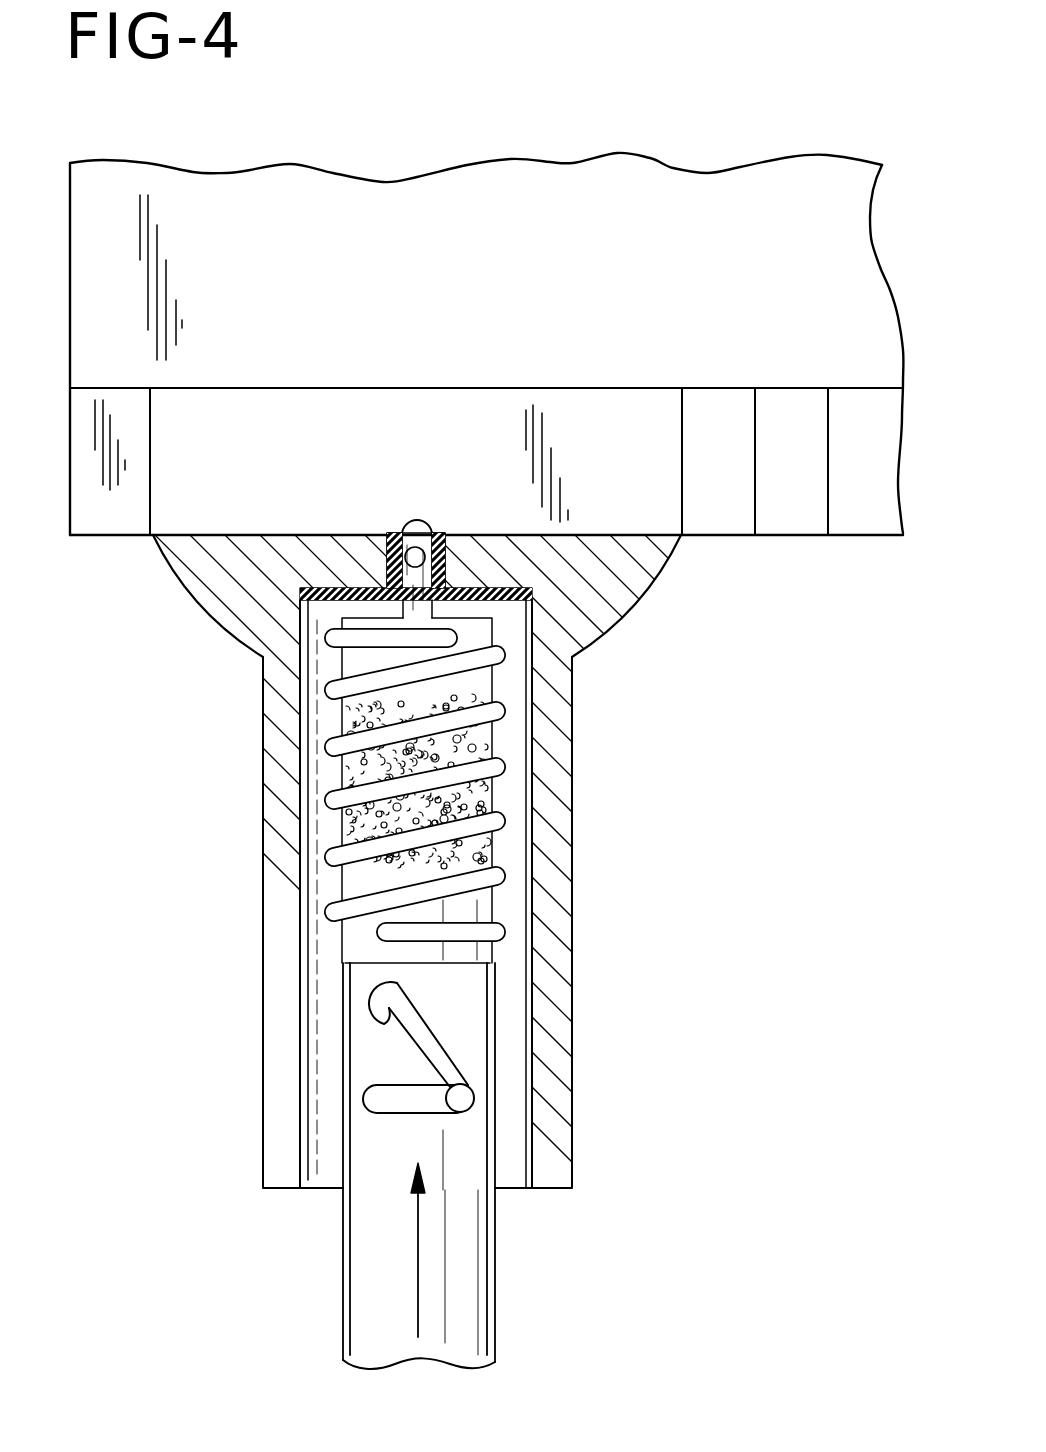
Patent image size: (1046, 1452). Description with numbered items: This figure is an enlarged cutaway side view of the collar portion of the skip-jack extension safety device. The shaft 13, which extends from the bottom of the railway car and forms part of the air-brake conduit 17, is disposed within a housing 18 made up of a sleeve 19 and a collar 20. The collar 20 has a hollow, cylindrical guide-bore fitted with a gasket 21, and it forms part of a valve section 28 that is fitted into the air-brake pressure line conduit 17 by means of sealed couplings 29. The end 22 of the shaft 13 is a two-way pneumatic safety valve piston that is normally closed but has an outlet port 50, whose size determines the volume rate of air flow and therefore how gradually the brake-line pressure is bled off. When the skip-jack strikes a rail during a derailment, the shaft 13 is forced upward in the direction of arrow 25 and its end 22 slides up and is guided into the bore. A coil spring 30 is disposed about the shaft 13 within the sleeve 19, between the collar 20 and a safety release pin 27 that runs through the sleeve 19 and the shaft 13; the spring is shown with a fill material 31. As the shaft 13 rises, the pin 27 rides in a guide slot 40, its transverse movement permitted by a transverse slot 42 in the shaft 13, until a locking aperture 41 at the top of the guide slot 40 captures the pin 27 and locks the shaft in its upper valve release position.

The shaft 13 is at (497, 1302).
The air-brake conduit 17 is at (860, 385).
The housing 18 is at (513, 1143).
The sleeve 19 is at (572, 828).
The collar 20 is at (670, 581).
The gasket 21 is at (530, 636).
The end of shaft / two-way pneumatic safety valve piston 22 is at (408, 525).
The arrow 25 is at (417, 1277).
The safety release pin 27 is at (447, 1085).
The valve section 28 is at (430, 367).
The sealed couplings 29 is at (718, 385).
The coil spring 30 is at (527, 703).
The spring with fill material 31 is at (342, 830).
The guide slot 40 is at (418, 1029).
The locking aperture 41 is at (375, 1012).
The transverse slot 42 is at (363, 1090).
The port 50 is at (300, 595).